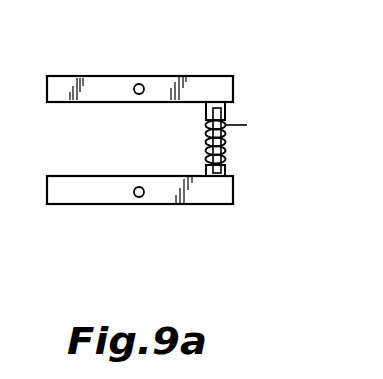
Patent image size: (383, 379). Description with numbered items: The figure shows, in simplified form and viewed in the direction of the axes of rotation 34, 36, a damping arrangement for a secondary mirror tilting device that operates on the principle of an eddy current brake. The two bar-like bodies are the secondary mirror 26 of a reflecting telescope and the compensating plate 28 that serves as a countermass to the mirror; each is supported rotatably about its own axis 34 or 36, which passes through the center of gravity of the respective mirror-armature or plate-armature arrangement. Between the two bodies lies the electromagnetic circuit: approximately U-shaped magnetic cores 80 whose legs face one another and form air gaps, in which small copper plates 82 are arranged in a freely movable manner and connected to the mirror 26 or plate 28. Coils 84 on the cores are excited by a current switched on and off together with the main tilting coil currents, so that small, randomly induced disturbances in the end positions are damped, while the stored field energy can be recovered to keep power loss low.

The secondary mirror 26 is at (92, 192).
The compensating plate 28 is at (203, 86).
The axis of rotation 34 is at (139, 198).
The axis of rotation 36 is at (139, 84).
The magnetic core 80 is at (222, 110).
The copper plate 82 is at (230, 176).
The coil 84 is at (226, 152).